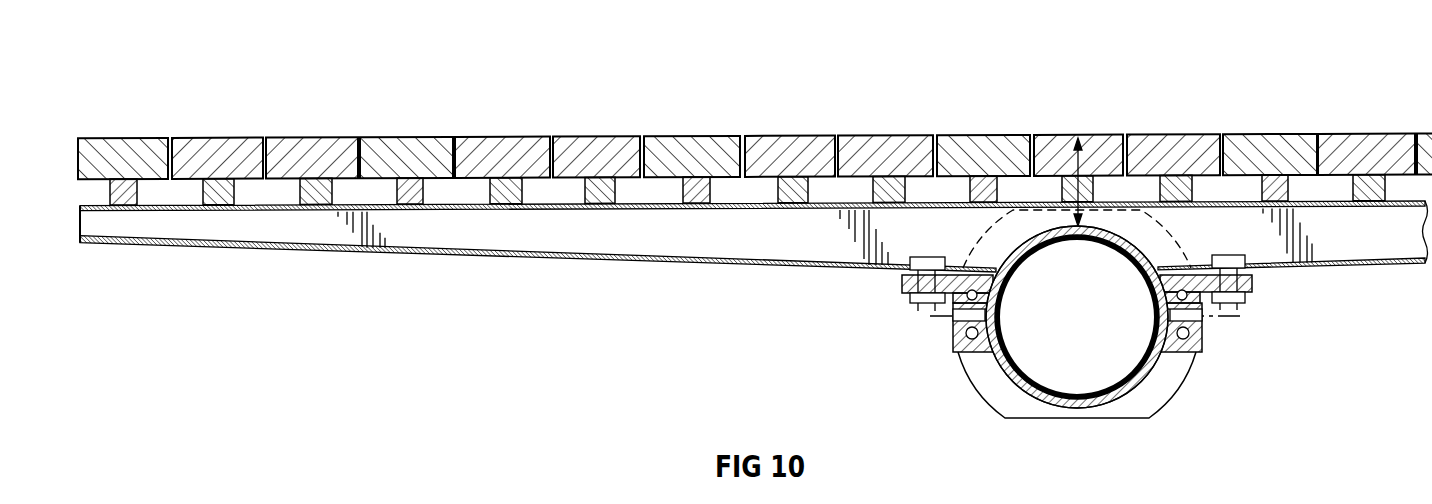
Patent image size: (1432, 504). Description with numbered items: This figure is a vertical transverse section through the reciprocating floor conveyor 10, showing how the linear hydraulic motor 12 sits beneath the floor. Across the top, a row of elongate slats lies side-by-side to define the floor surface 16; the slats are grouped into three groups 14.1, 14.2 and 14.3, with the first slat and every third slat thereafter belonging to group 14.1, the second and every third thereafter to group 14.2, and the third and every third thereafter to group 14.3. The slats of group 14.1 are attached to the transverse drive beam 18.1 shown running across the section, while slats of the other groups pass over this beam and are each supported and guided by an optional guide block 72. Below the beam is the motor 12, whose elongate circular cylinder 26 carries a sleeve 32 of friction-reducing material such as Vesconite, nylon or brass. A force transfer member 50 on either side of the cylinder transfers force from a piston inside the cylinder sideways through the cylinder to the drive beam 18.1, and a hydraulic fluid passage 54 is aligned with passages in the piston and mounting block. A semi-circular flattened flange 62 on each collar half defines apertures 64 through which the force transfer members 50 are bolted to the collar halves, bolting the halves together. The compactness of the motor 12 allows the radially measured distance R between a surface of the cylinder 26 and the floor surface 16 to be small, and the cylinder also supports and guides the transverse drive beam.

The reciprocating floor conveyor 10 is at (1263, 52).
The linear hydraulic motor 12 is at (920, 347).
The first group of slats 14.1 is at (140, 158).
The second group of slats 14.2 is at (793, 158).
The third group of slats 14.3 is at (318, 160).
The floor surface 16 is at (720, 140).
The transverse drive beam 18.1 is at (612, 265).
The cylinder 26 is at (1082, 392).
The sleeve 32 is at (1066, 410).
The force transfer member 50 is at (967, 352).
The hydraulic fluid passage 54 is at (958, 316).
The semi-circular flattened flange 62 is at (1140, 207).
The aperture 64 is at (905, 290).
The guide block 72 is at (217, 208).
The radially measured distance R is at (1080, 168).